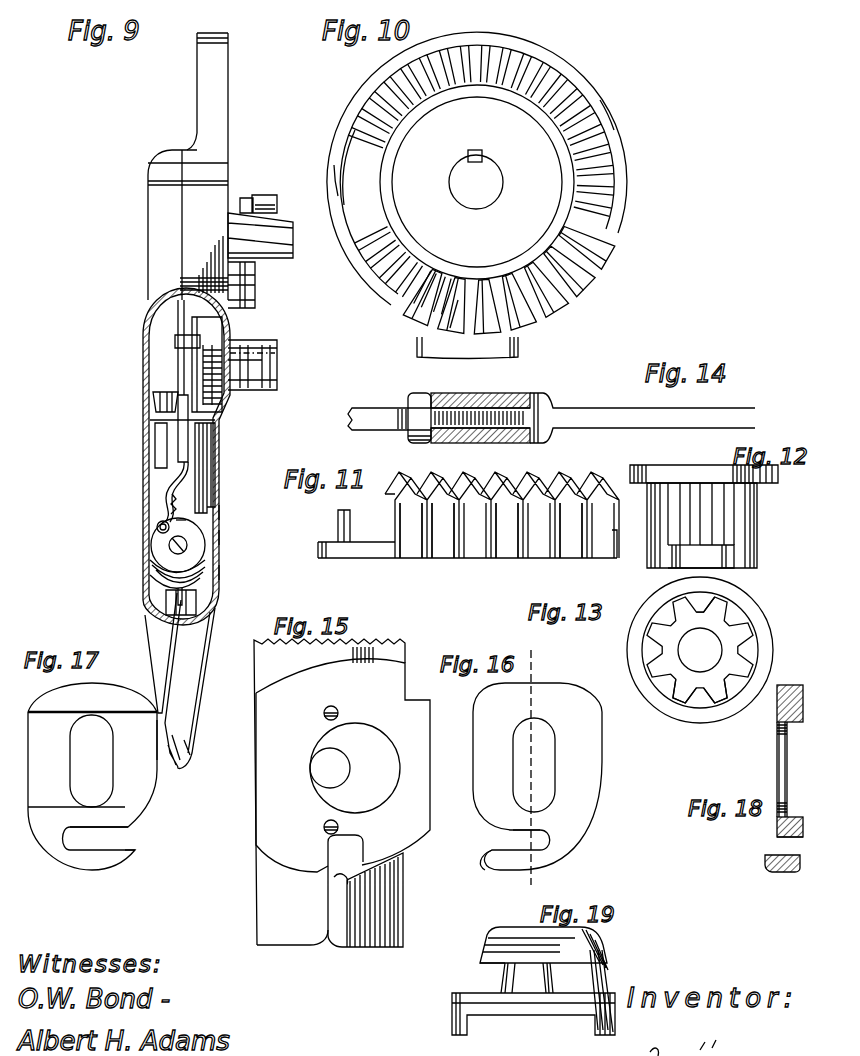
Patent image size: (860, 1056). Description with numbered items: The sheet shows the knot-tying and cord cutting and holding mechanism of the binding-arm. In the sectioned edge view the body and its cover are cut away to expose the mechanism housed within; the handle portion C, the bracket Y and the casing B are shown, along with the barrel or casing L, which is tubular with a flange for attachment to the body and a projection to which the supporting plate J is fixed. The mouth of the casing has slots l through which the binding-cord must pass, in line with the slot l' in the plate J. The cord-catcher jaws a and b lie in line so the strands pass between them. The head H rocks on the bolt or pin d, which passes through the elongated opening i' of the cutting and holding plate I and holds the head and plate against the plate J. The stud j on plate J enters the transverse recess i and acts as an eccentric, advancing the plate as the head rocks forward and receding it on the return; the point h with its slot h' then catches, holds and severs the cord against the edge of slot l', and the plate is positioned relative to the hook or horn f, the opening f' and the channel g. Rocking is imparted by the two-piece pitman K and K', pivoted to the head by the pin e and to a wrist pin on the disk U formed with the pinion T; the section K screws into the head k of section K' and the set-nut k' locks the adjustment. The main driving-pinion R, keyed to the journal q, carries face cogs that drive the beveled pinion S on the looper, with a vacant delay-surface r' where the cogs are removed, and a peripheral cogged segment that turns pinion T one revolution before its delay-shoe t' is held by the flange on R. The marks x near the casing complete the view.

In FIG. 9, the handle stem C is at (207, 166).
In FIG. 9, the bracket arm Y is at (260, 251).
In FIG. 9, the casing B is at (173, 456).
In FIG. 9, the pinion T is at (232, 338).
In FIG. 12, the pinion T is at (711, 525).
In FIG. 13, the pinion T is at (700, 650).
In FIG. 9, the main driving-pinion R is at (207, 361).
In FIG. 10, the main driving-pinion R is at (477, 168).
In FIG. 11, the main driving-pinion R is at (468, 507).
In FIG. 9, the jaw or shoulder a is at (177, 347).
In FIG. 9, the jaw or shoulder b is at (150, 402).
In FIG. 9, the head of pitman section K' k is at (177, 428).
In FIG. 14, the head of pitman section K' k is at (480, 409).
In FIG. 9, the pitman section K is at (176, 492).
In FIG. 14, the pitman section K is at (378, 406).
In FIG. 9, the barrel or casing L is at (177, 504).
In FIG. 9, the bolt or pin d is at (177, 553).
In FIG. 9, the pin or pivot e is at (168, 525).
In FIG. 9, the slot l is at (181, 601).
In FIG. 15, the slot l is at (365, 900).
In FIG. 9, the stop x is at (220, 518).
In FIG. 9, the supporting or bearing plate J is at (222, 537).
In FIG. 15, the supporting or bearing plate J is at (343, 765).
In FIG. 9, the hook or horn f is at (229, 570).
In FIG. 19, the hook or horn f is at (527, 967).
In FIG. 10, the journal q is at (476, 179).
In FIG. 10, the vacant space or delay-surface r' is at (354, 167).
In FIG. 10, the beveled pinion S is at (509, 293).
In FIG. 14, the set-nut k' is at (419, 418).
In FIG. 14, the pitman section K' is at (642, 413).
In FIG. 12, the disk or plate U is at (704, 465).
In FIG. 13, the disk or plate U is at (762, 660).
In FIG. 12, the delay-shoe t' is at (699, 556).
In FIG. 13, the delay-shoe t' is at (705, 612).
In FIG. 15, the stud or projection j is at (355, 768).
In FIG. 15, the slot or opening l' is at (351, 850).
In FIG. 16, the cutting and holding plate I is at (537, 776).
In FIG. 17, the cutting and holding plate I is at (92, 776).
In FIG. 18, the cutting and holding plate I is at (795, 761).
In FIG. 16, the elongated opening i' is at (534, 765).
In FIG. 17, the elongated opening i' is at (91, 761).
In FIG. 18, the elongated opening i' is at (782, 769).
In FIG. 17, the transverse channel or recess i is at (144, 742).
In FIG. 16, the opening or slot h' is at (520, 840).
In FIG. 17, the opening or slot h' is at (99, 837).
In FIG. 18, the opening or slot h' is at (780, 846).
In FIG. 16, the point h is at (487, 869).
In FIG. 17, the point h is at (128, 867).
In FIG. 18, the point h is at (782, 874).
In FIG. 19, the head H is at (546, 979).
In FIG. 19, the opening f' is at (489, 978).
In FIG. 19, the groove or channel g is at (533, 1014).